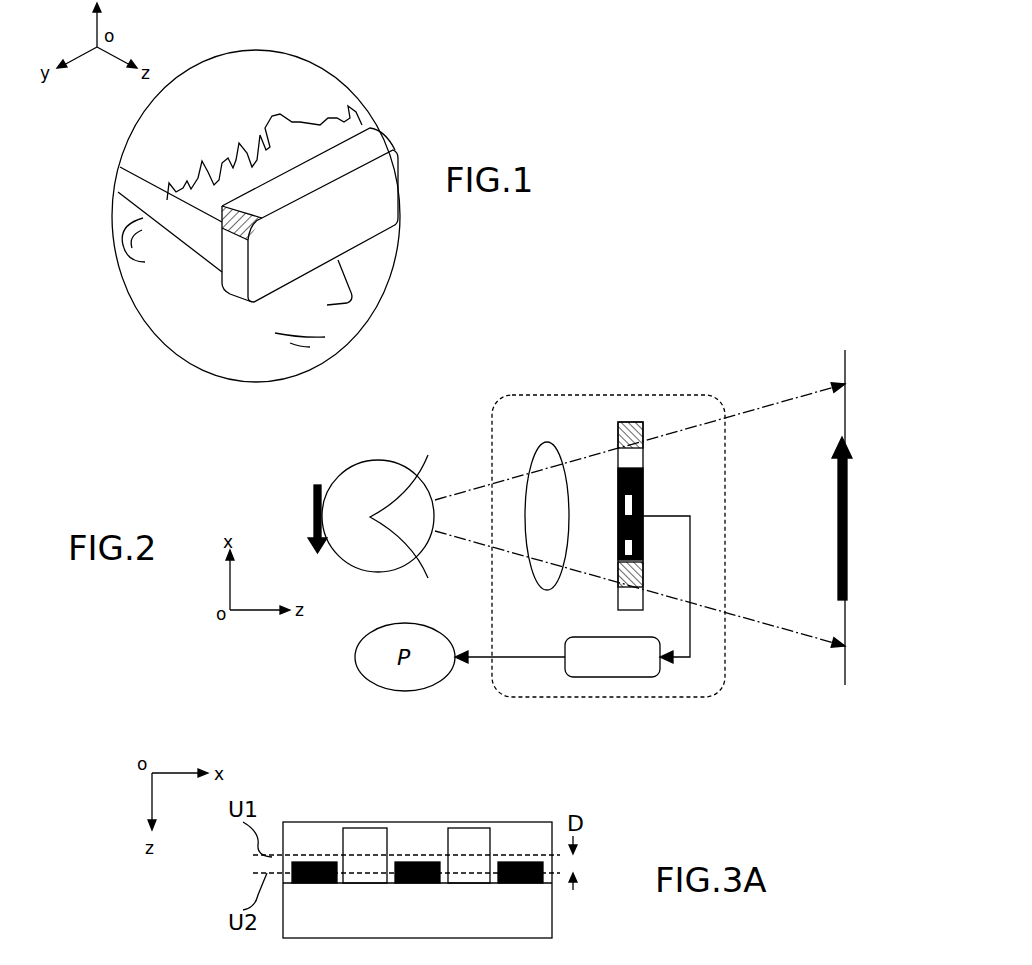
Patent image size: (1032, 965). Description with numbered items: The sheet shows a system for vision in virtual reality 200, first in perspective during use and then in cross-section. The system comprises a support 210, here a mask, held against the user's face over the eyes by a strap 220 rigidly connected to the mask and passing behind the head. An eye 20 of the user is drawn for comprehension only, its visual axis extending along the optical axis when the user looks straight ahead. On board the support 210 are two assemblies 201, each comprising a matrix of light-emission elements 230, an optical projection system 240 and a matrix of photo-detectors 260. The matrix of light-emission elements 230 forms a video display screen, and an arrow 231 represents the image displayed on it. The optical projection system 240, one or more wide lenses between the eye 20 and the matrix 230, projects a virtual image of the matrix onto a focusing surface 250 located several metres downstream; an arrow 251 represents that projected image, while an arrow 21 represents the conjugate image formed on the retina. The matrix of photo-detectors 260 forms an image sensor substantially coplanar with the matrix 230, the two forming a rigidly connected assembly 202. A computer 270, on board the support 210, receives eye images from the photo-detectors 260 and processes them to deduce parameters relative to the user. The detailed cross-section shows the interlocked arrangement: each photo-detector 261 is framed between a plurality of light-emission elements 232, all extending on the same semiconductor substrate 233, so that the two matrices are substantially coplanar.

In FIG. 2, the eye 20 is at (362, 458).
In FIG. 2, the arrow representing image formed on the retina 21 is at (310, 492).
In FIG. 1, the system for vision in virtual reality 200 is at (345, 55).
In FIG. 2, the system for vision in virtual reality 200 is at (759, 338).
In FIG. 2, the assembly 201 is at (668, 290).
In FIG. 2, the rigidly connected assembly 202 is at (695, 334).
In FIG. 1, the support 210 is at (372, 142).
In FIG. 2, the support 210 is at (548, 700).
In FIG. 1, the strap 220 is at (117, 182).
In FIG. 2, the matrix of light-emission elements 230 is at (618, 458).
In FIG. 2, the arrow representing image displayed on the matrix 231 is at (643, 500).
In FIG. 3A, the light-emission elements 232 is at (466, 832).
In FIG. 3A, the substrate 233 is at (543, 908).
In FIG. 2, the optical projection system 240 is at (547, 442).
In FIG. 2, the focusing surface 250 is at (847, 362).
In FIG. 2, the arrow representing image projected onto the focusing surface 251 is at (848, 500).
In FIG. 2, the matrix of photo-detectors 260 is at (631, 422).
In FIG. 3A, the photo-detector 261 is at (315, 860).
In FIG. 2, the computer 270 is at (632, 663).